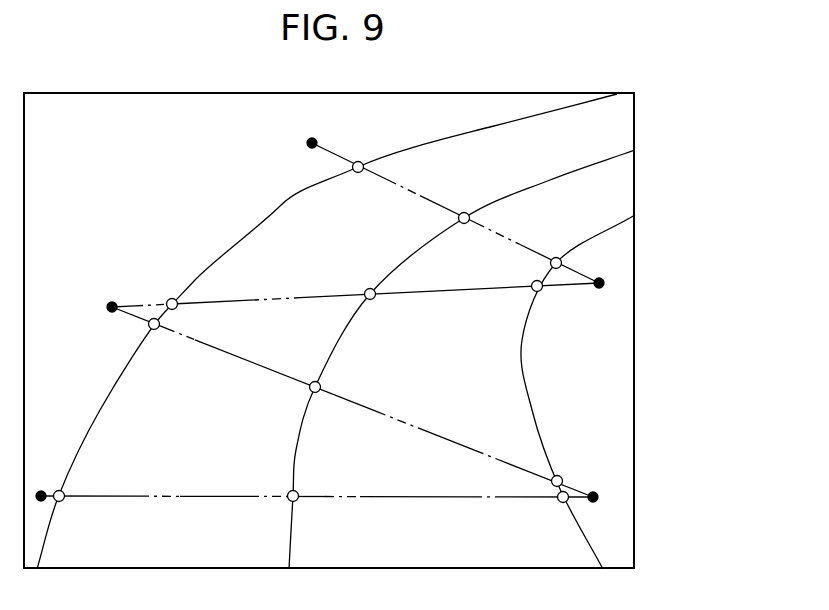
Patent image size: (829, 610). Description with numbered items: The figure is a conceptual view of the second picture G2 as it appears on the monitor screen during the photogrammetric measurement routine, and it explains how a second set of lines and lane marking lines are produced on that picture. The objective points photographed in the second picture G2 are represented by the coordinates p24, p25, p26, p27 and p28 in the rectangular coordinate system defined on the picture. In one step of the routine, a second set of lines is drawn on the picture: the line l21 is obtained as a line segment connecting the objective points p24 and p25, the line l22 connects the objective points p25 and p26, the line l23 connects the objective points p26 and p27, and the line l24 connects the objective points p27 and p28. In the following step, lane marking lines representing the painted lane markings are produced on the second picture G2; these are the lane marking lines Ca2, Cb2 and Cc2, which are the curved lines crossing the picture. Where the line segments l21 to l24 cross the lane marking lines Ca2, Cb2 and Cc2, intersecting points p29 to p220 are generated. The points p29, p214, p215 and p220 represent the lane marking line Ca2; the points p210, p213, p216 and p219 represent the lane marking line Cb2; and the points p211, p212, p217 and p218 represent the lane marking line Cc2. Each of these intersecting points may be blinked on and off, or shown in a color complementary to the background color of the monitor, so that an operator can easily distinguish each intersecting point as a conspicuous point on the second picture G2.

The second picture G2 is at (637, 303).
The lane marking line Ca2 is at (231, 245).
The lane marking line Cb2 is at (301, 435).
The lane marking line Cc2 is at (539, 436).
The line l21 is at (422, 197).
The line l22 is at (447, 293).
The line l23 is at (365, 403).
The line l24 is at (333, 494).
The objective point p24 is at (307, 142).
The objective point p25 is at (598, 289).
The objective point p26 is at (110, 313).
The objective point p27 is at (588, 503).
The objective point p28 is at (46, 502).
The intersecting point p29 is at (361, 162).
The intersecting point p210 is at (470, 218).
The intersecting point p211 is at (550, 263).
The intersecting point p212 is at (540, 292).
The intersecting point p213 is at (367, 288).
The intersecting point p214 is at (171, 298).
The intersecting point p215 is at (157, 331).
The intersecting point p216 is at (312, 381).
The intersecting point p217 is at (562, 477).
The intersecting point p218 is at (558, 495).
The intersecting point p219 is at (289, 500).
The intersecting point p220 is at (63, 492).